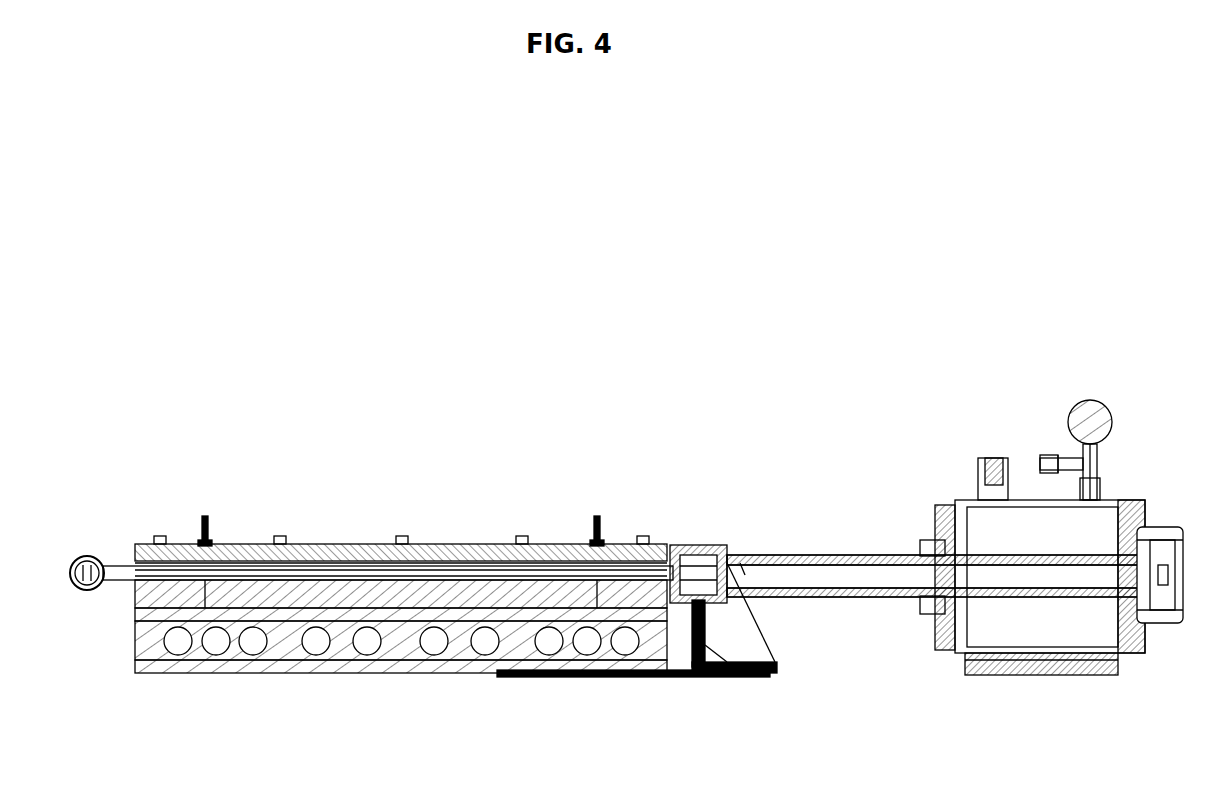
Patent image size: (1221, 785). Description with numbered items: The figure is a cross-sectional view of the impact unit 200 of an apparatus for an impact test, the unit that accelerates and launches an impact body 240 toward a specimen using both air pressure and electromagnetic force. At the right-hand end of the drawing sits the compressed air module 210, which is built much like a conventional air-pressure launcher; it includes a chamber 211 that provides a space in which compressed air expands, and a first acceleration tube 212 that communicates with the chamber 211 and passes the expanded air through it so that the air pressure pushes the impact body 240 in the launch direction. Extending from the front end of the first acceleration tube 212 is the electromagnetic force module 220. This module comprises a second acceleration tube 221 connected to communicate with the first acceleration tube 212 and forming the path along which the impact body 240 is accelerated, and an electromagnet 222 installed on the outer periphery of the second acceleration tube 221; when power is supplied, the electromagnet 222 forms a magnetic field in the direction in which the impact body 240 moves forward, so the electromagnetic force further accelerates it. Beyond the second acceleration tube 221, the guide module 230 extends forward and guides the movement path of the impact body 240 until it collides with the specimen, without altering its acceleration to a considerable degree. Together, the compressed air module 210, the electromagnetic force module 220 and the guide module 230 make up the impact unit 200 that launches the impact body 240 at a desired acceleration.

The impact unit 200 is at (618, 541).
The compressed air module 210 is at (843, 378).
The chamber 211 is at (967, 502).
The first acceleration tube 212 is at (813, 555).
The electromagnetic force module 220 is at (456, 590).
The second acceleration tube 221 is at (310, 553).
The electromagnet 222 is at (300, 612).
The guide module 230 is at (115, 571).
The impact body 240 is at (82, 540).